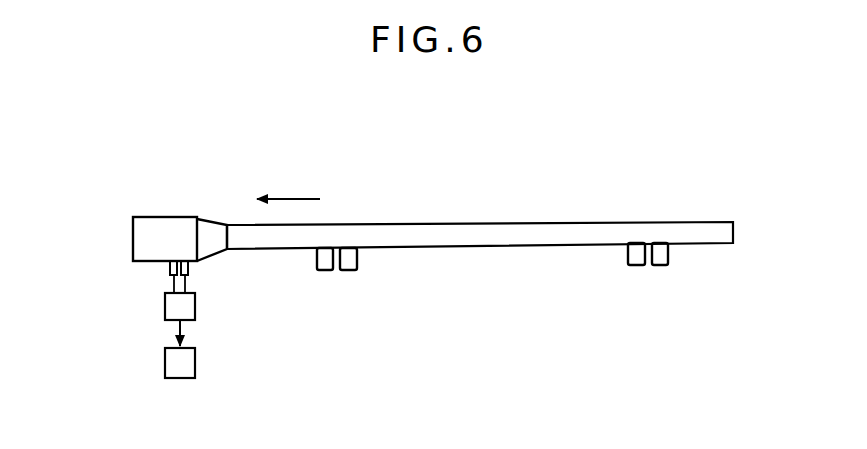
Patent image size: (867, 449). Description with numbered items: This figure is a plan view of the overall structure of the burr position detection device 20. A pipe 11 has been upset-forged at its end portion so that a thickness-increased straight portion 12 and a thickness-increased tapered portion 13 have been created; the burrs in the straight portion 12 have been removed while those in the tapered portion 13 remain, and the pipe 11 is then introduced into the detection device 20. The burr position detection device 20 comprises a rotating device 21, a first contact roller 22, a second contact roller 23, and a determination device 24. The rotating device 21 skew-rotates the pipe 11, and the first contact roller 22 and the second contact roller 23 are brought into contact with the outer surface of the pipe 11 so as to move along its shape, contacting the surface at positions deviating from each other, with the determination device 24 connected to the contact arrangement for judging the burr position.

The pipe 11 is at (470, 231).
The thickness-increased straight portion 12 is at (162, 222).
The thickness-increased tapered portion 13 is at (213, 228).
The burr position detection device 20 is at (130, 334).
The rotating device 21 is at (357, 253).
The first contact roller 22 is at (170, 268).
The second contact roller 23 is at (190, 268).
The determination device 24 is at (195, 363).